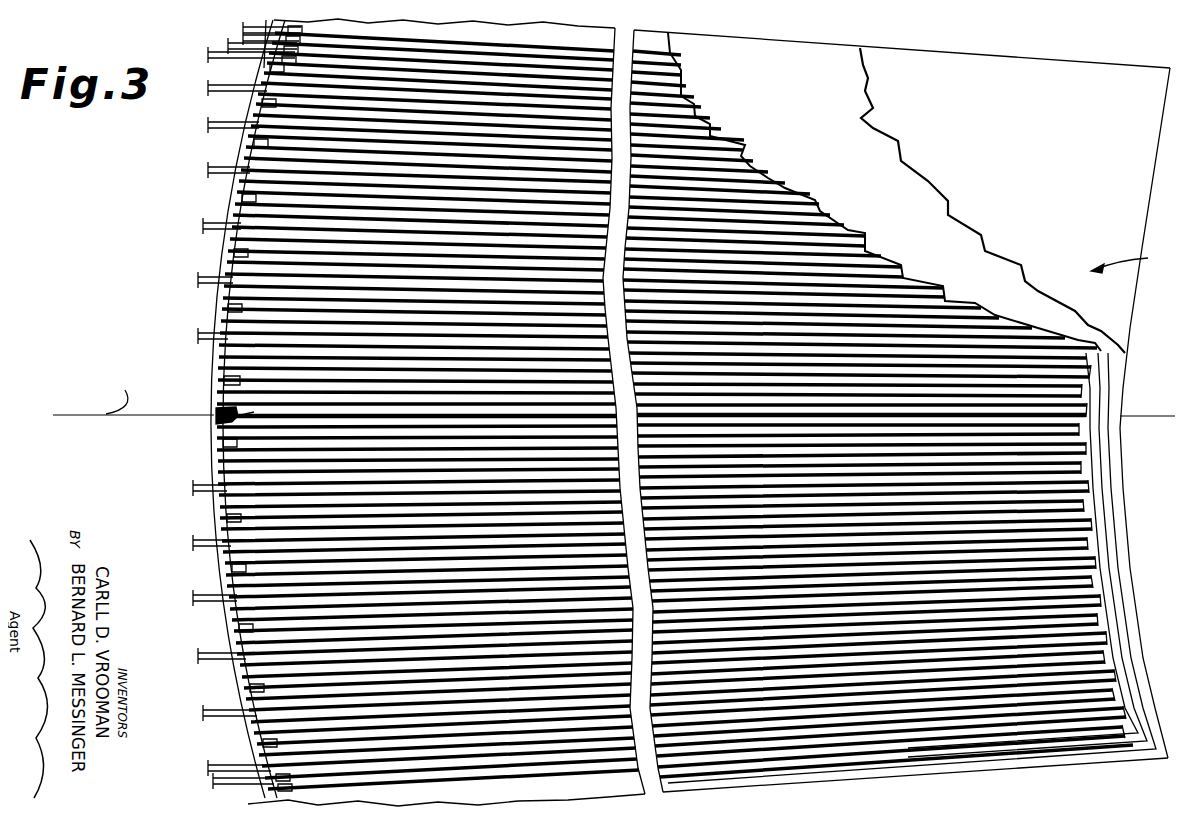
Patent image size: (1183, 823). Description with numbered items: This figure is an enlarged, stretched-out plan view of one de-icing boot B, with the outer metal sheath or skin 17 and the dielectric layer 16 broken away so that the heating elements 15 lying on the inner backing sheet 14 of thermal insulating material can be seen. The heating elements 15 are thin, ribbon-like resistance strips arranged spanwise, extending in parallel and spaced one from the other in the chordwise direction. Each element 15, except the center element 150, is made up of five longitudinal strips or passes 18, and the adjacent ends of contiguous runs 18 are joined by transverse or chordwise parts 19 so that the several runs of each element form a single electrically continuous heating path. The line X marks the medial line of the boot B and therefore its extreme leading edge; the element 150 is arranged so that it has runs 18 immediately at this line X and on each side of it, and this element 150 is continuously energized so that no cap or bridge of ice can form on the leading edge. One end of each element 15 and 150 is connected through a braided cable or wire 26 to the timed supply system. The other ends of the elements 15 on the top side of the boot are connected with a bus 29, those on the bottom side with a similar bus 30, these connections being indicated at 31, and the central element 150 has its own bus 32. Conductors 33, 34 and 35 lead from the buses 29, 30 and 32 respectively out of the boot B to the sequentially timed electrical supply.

The inner layer or sheet of thermal insulating and backing material 14 is at (238, 682).
The heating element 15 is at (242, 541).
The dielectric layer 16 is at (806, 135).
The outer sheath or skin 17 is at (988, 132).
The strip or pass (run) 18 is at (222, 420).
The transverse or chordwise connecting part 19 is at (236, 262).
The braided cable or wire 26 is at (218, 375).
The bus 29 is at (1084, 362).
The bus 30 is at (1097, 522).
The connection 31 is at (1082, 389).
The bus 32 is at (1088, 397).
The wire or conductor 33 is at (258, 44).
The wire or conductor 34 is at (232, 786).
The wire or conductor 35 is at (257, 42).
The center heating element 150 is at (222, 409).
The boot B is at (1124, 253).
The medial line X is at (614, 396).